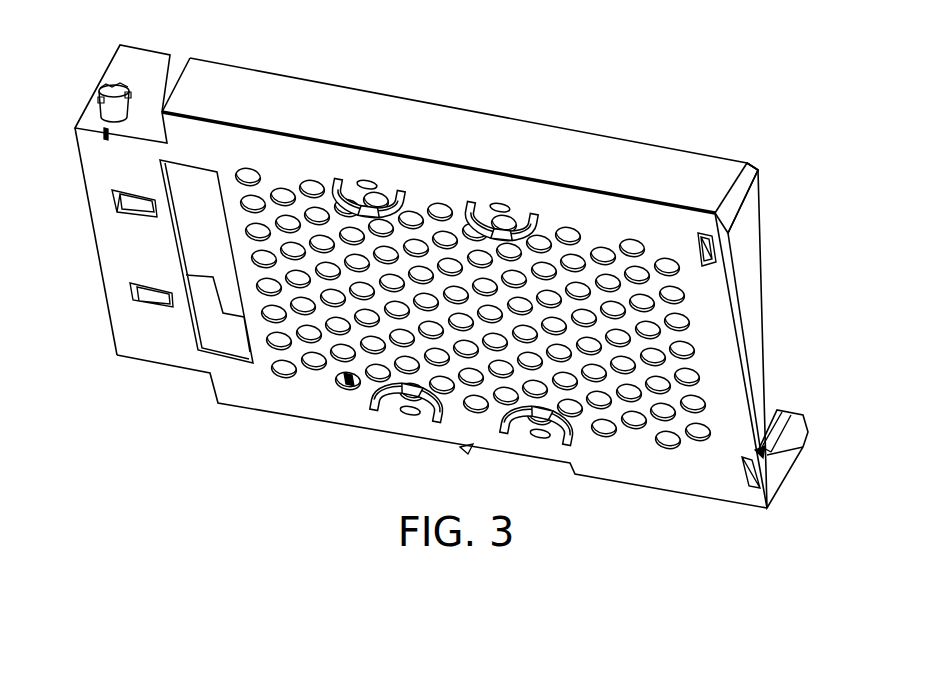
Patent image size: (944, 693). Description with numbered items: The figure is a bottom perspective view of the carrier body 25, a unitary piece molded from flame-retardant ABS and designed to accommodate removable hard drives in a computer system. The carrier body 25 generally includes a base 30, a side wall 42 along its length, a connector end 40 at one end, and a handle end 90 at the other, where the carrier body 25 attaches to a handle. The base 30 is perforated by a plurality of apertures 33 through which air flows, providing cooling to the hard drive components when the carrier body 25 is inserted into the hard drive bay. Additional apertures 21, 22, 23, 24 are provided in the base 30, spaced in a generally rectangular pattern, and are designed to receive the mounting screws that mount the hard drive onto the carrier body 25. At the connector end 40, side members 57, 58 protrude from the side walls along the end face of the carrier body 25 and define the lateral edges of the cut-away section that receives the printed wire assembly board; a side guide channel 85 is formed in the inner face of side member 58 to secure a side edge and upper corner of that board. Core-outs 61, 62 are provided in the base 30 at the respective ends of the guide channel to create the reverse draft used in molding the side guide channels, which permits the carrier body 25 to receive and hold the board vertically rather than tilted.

The aperture 21 is at (512, 207).
The aperture 22 is at (367, 178).
The aperture 23 is at (407, 412).
The aperture 24 is at (538, 436).
The carrier body 25 is at (415, 84).
The base 30 is at (257, 387).
The apertures 33 is at (603, 250).
The connector end 40 is at (750, 146).
The side wall 42 is at (270, 95).
The side member 57 is at (745, 190).
The side member 58 is at (783, 462).
The core-out 61 is at (713, 250).
The core-out 62 is at (763, 488).
The side guide channel 85 is at (787, 410).
The handle end 90 is at (75, 93).